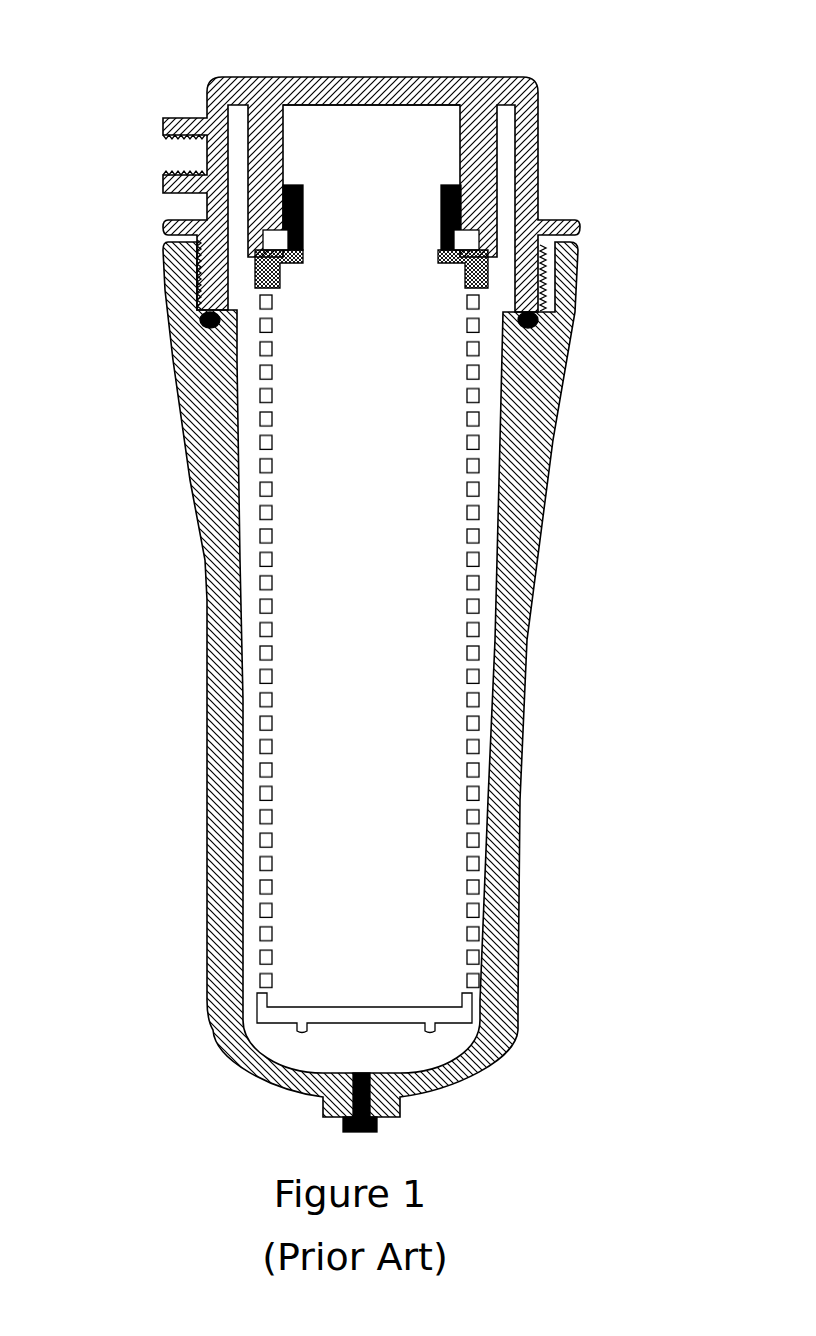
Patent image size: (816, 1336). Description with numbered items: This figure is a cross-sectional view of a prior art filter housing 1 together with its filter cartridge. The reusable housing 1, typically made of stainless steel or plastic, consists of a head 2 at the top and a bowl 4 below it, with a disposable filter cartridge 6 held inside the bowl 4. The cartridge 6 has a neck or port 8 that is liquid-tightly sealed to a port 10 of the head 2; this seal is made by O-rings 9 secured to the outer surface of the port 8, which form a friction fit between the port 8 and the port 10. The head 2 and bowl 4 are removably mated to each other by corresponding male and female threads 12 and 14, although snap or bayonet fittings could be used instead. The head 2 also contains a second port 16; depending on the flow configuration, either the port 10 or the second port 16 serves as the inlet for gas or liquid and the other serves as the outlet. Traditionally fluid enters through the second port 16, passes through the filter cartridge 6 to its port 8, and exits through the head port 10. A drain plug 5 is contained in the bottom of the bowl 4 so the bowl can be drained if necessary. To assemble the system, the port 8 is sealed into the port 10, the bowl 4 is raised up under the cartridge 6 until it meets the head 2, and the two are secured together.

The housing 1 is at (190, 720).
The head 2 is at (367, 77).
The bowl 4 is at (520, 566).
The drain plug 5 is at (362, 1132).
The filter cartridge 6 is at (463, 713).
The port 8 is at (440, 198).
The O-rings 9 is at (290, 182).
The port 10 is at (410, 140).
The male threads 12 is at (577, 273).
The female threads 14 is at (577, 282).
The second port 16 is at (193, 158).